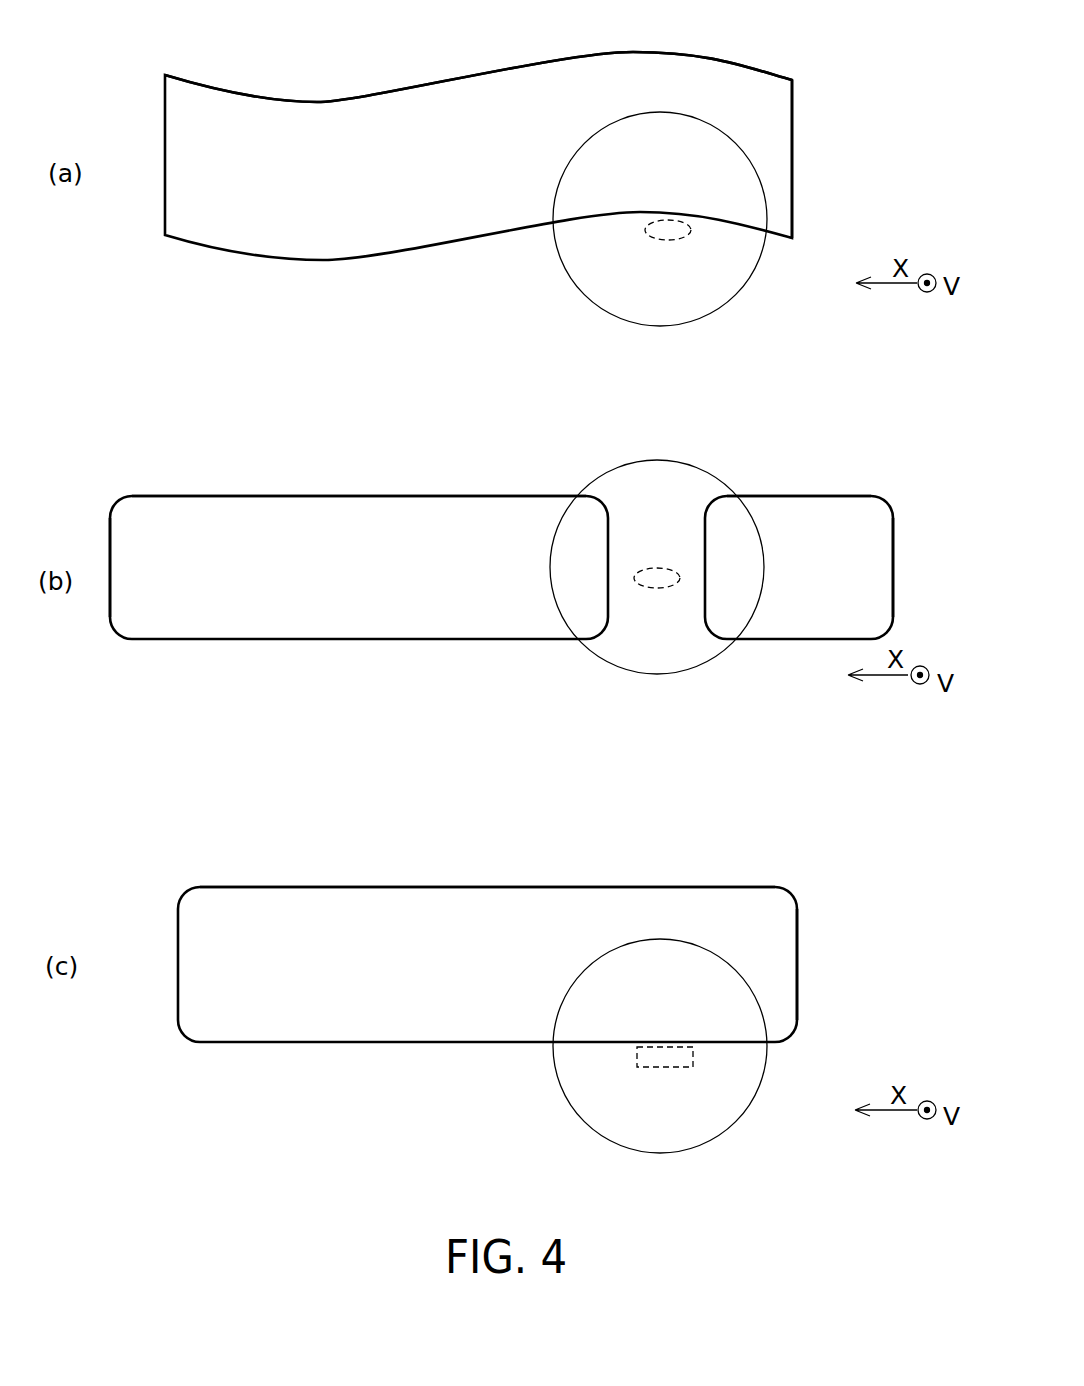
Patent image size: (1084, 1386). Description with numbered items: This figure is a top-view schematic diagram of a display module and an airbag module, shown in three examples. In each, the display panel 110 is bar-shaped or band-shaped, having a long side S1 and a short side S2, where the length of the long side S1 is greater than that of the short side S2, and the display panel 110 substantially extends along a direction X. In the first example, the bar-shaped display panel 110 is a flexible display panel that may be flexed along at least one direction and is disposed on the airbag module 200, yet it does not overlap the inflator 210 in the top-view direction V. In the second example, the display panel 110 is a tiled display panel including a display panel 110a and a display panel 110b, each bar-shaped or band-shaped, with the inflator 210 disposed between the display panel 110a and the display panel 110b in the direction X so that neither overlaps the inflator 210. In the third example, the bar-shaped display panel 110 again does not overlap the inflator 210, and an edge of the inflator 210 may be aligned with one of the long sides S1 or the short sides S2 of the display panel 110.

The display panel 110 is at (775, 102).
The display panel 110a is at (229, 515).
The display panel 110b is at (863, 510).
The airbag module 200 is at (606, 285).
The inflator 210 is at (682, 232).
The long side S1 is at (333, 101).
The short side S2 is at (792, 173).